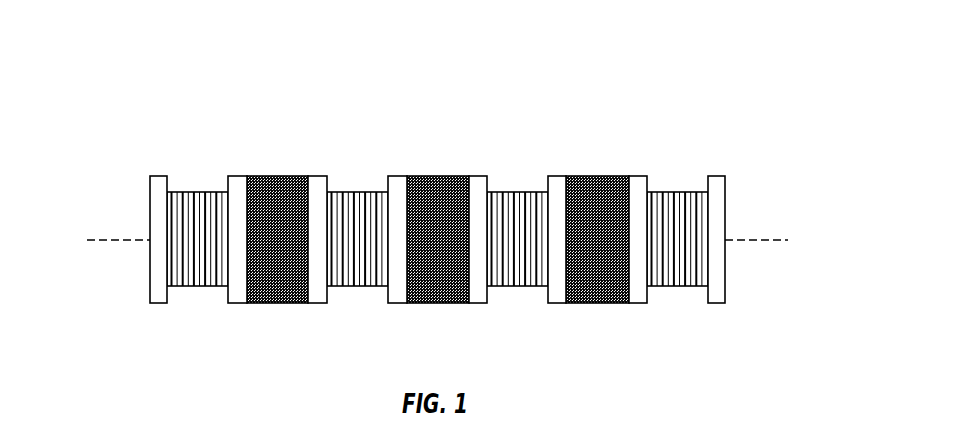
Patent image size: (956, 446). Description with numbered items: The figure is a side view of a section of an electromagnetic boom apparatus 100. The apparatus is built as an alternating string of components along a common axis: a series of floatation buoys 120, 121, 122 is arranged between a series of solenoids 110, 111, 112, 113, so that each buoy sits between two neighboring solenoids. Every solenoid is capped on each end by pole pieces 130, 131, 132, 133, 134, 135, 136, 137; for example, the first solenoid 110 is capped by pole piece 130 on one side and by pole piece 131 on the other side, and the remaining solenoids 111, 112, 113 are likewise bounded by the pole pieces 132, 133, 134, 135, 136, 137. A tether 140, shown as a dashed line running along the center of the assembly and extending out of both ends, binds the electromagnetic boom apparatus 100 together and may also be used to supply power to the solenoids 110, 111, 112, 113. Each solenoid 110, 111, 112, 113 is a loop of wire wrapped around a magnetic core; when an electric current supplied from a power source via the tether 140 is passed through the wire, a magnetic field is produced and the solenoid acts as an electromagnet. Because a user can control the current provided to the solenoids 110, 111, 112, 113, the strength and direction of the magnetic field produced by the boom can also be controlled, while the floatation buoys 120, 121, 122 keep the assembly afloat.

The electromagnetic boom apparatus 100 is at (166, 89).
The solenoid 110 is at (183, 192).
The solenoid 111 is at (347, 192).
The solenoid 112 is at (510, 192).
The solenoid 113 is at (668, 192).
The floatation buoy 120 is at (260, 176).
The floatation buoy 121 is at (420, 176).
The floatation buoy 122 is at (583, 176).
The pole piece 130 is at (160, 303).
The pole piece 131 is at (240, 303).
The pole piece 132 is at (317, 303).
The pole piece 133 is at (398, 303).
The pole piece 134 is at (478, 303).
The pole piece 135 is at (558, 303).
The pole piece 136 is at (637, 303).
The pole piece 137 is at (715, 303).
The tether 140 is at (123, 239).